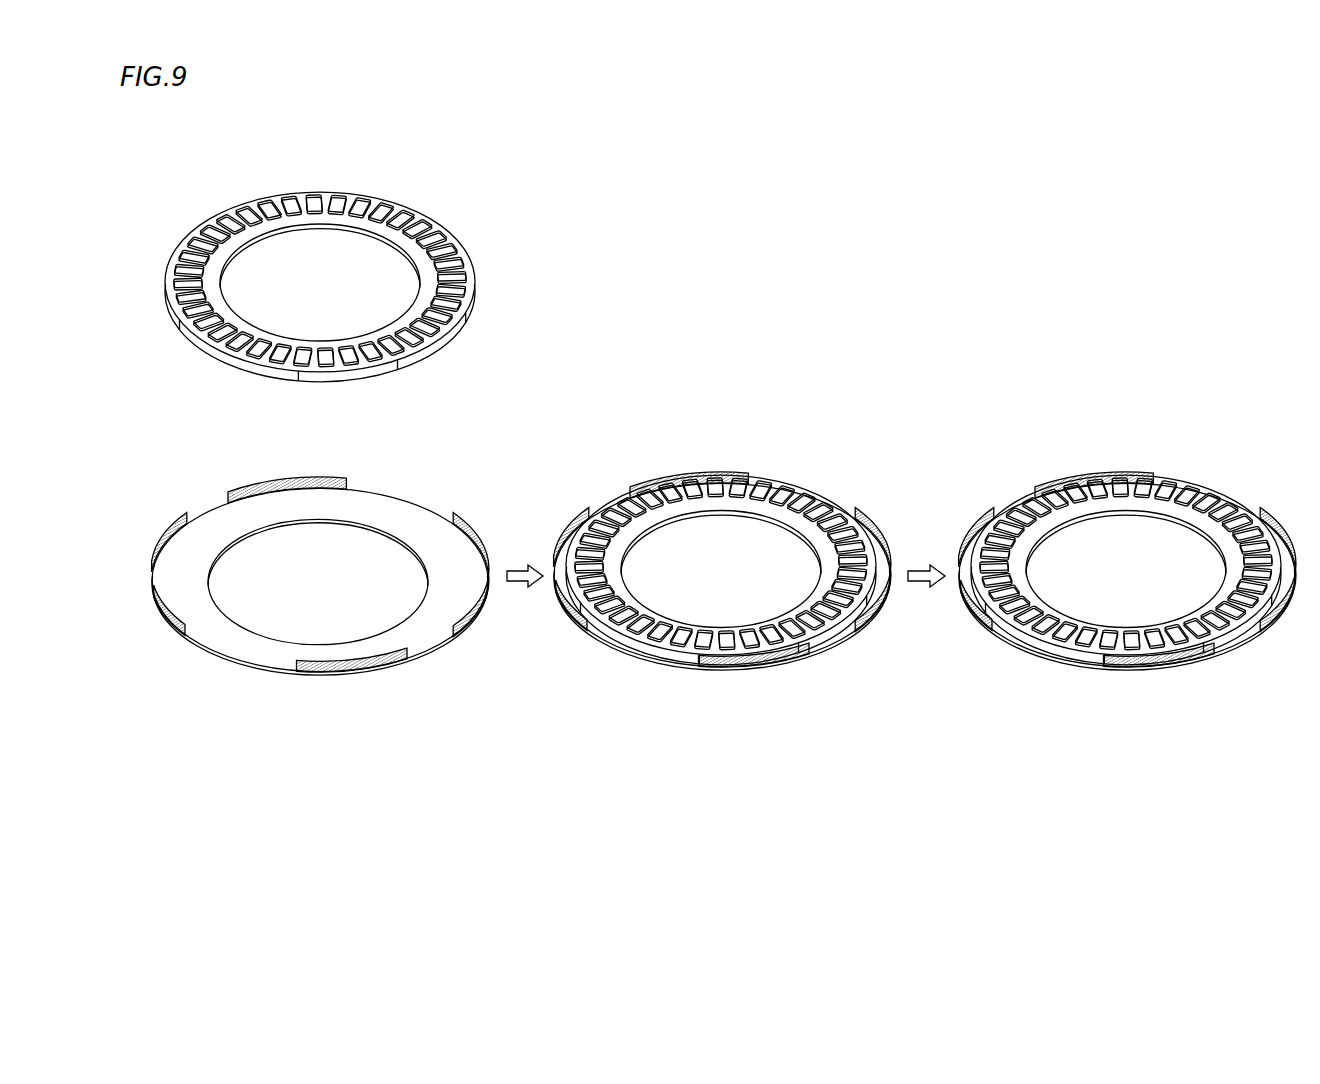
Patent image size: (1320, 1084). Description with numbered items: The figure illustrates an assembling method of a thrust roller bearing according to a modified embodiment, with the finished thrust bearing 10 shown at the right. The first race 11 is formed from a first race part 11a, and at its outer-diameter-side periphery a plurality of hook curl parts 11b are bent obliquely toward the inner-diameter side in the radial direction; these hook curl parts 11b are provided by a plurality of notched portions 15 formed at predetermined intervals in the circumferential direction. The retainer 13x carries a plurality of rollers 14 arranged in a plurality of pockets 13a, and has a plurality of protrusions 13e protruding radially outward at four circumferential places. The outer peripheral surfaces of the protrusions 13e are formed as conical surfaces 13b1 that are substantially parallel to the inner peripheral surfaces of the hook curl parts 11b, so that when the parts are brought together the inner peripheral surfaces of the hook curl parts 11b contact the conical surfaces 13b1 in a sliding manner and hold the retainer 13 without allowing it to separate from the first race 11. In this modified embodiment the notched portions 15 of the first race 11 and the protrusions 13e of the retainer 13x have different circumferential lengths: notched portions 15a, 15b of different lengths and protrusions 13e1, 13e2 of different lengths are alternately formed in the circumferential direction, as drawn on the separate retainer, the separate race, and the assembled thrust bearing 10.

The thrust bearing 10 is at (1262, 491).
The first race 11 is at (395, 669).
The first race part 11a is at (177, 602).
The hook curl parts 11b is at (158, 592).
The retainer 13 is at (1082, 510).
The pockets 13a is at (397, 222).
The conical surfaces 13b1 is at (217, 358).
The protrusions 13e is at (835, 507).
The protrusions 13e1 is at (425, 212).
The protrusions 13e2 is at (413, 358).
The retainer 13x is at (250, 202).
The rollers 14 is at (363, 194).
The notched portions 15 is at (653, 553).
The notched portions 15a is at (225, 655).
The notched portions 15b is at (433, 650).